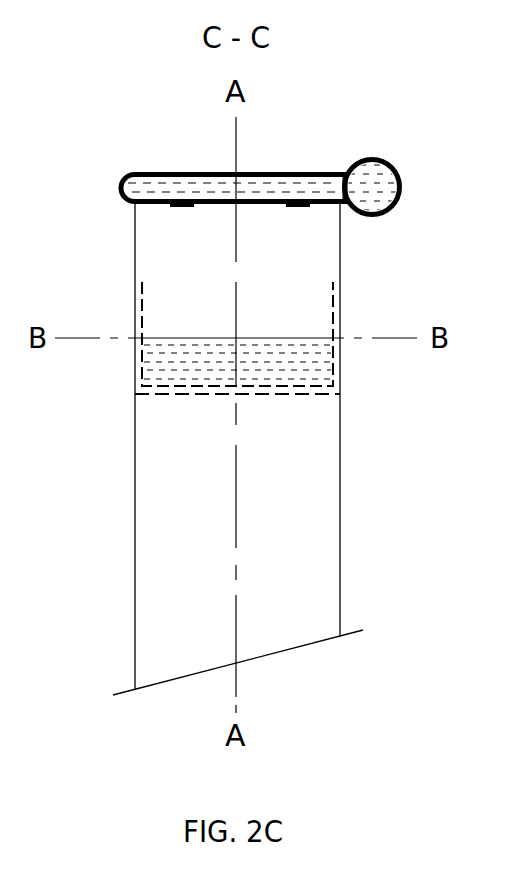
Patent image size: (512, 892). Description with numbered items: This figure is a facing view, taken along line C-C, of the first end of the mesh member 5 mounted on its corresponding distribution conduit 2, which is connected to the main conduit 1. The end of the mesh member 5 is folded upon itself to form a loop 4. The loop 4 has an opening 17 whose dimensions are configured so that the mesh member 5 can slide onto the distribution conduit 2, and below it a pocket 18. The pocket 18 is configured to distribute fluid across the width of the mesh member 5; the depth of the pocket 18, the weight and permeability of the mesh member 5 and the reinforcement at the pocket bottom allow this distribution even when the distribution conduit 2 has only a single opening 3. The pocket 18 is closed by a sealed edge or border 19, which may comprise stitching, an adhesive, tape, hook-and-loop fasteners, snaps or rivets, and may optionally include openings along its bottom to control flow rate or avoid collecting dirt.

The main conduit 1 is at (380, 156).
The distribution conduit 2 is at (130, 173).
The opening 3 is at (298, 203).
The loop 4 is at (335, 297).
The mesh member 5 is at (133, 527).
The opening 17 is at (322, 250).
The pocket 18 is at (140, 370).
The sealed edge or border 19 is at (342, 385).